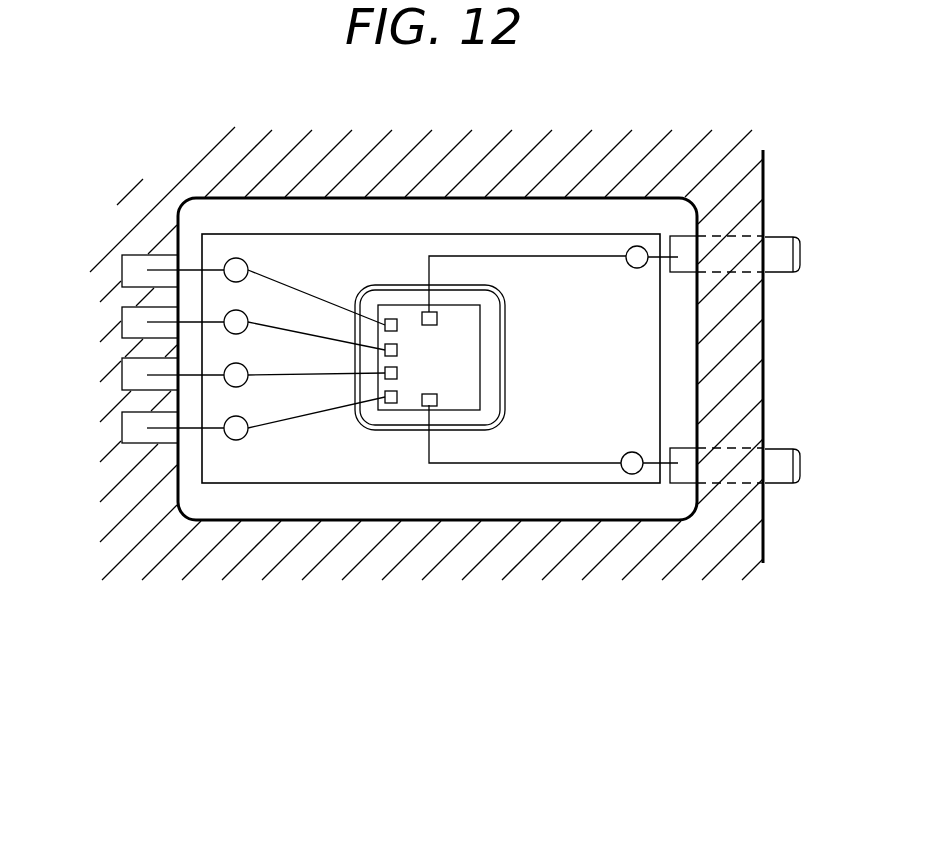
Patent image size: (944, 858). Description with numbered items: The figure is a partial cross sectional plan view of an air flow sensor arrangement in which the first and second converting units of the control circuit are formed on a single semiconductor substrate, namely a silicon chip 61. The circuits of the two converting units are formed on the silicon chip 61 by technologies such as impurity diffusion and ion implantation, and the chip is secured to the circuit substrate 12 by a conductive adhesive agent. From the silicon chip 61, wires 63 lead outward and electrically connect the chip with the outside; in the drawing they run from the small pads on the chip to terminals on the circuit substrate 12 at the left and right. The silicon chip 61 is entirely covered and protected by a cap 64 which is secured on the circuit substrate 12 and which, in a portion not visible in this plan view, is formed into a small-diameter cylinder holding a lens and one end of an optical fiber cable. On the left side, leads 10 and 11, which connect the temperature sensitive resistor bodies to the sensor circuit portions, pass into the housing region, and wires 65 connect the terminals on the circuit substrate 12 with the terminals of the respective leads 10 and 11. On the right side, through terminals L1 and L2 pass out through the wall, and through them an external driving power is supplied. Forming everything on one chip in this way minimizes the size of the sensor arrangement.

The lead 10 is at (122, 262).
The lead 11 is at (122, 316).
The circuit substrate 12 is at (347, 465).
The silicon chip 61 is at (465, 342).
The wires 63 is at (308, 335).
The cap 64 is at (505, 398).
The wires 65 is at (187, 273).
The through terminal L1 is at (800, 257).
The through terminal L2 is at (800, 466).